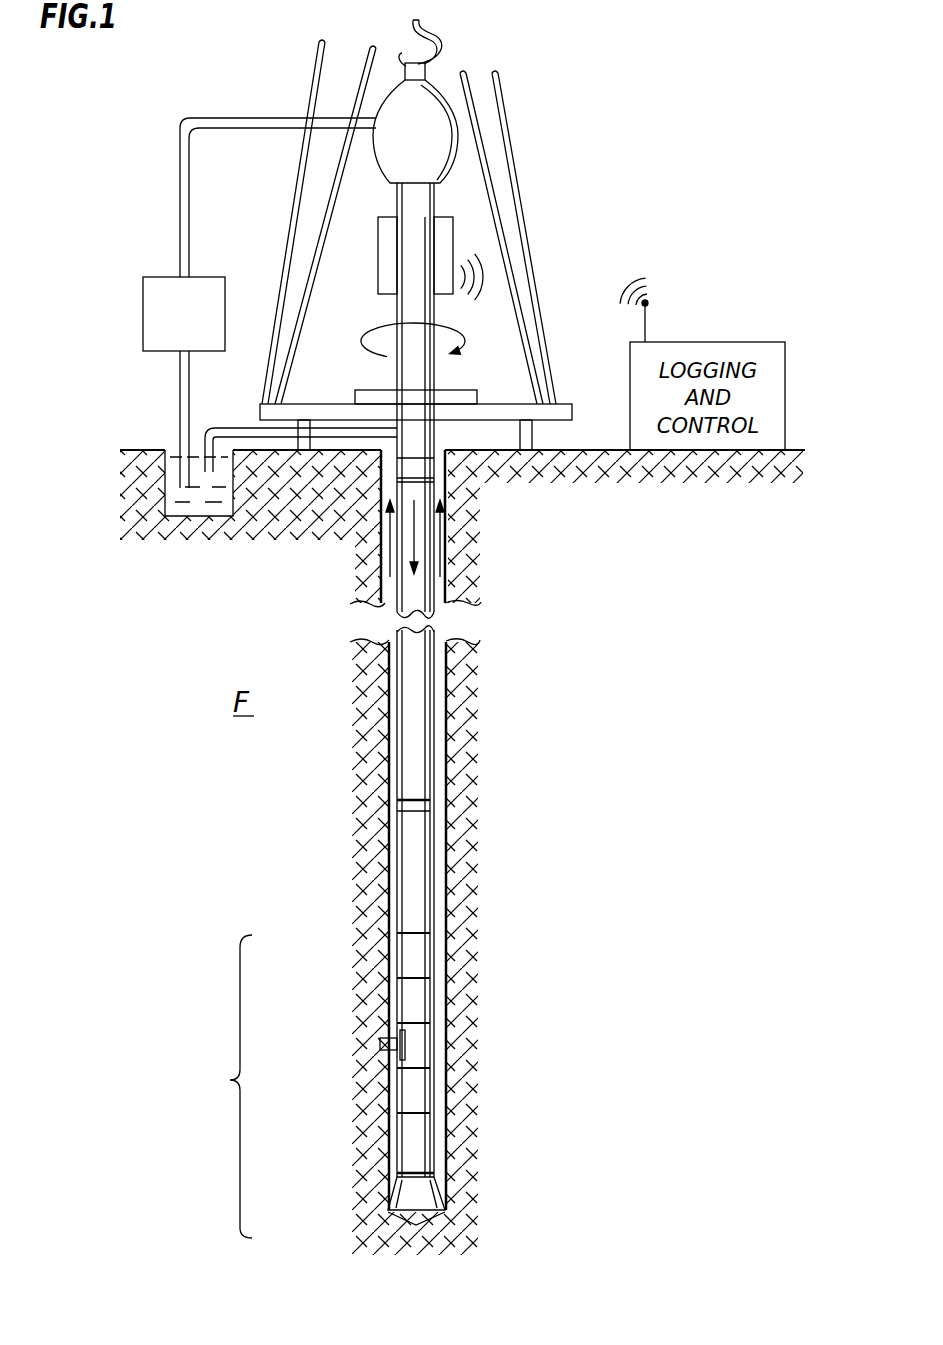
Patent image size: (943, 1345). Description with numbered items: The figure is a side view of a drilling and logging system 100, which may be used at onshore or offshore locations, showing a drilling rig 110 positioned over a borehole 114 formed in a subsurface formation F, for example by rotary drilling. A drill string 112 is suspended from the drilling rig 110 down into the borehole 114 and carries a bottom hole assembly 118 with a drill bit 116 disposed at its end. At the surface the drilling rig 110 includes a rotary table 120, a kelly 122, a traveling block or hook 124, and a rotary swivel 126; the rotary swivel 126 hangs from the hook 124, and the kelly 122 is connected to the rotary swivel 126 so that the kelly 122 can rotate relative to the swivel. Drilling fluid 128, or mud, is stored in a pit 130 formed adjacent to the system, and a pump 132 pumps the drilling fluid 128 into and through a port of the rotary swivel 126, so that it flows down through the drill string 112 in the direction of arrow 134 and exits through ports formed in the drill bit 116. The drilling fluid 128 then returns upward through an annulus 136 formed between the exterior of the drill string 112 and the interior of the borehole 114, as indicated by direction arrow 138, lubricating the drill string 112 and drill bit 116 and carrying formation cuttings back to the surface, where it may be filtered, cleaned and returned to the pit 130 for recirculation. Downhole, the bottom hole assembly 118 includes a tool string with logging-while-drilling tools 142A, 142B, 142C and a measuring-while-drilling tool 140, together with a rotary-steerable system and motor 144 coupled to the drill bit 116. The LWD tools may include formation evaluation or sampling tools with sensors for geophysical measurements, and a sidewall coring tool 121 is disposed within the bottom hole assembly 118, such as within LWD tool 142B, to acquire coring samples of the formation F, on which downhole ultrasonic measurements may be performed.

The drilling and logging system 100 is at (542, 118).
The drilling rig 110 is at (523, 178).
The drill string 112 is at (422, 767).
The borehole 114 is at (462, 420).
The drill bit 116 is at (418, 1194).
The bottom hole assembly 118 is at (230, 1080).
The rotary table 120 is at (455, 397).
The sidewall coring tool 121 is at (378, 1043).
The kelly 122 is at (408, 374).
The hook 124 is at (414, 29).
The rotary swivel 126 is at (403, 172).
The drilling fluid 128 is at (201, 512).
The pit 130 is at (172, 448).
The pump 132 is at (160, 352).
The direction arrow 134 is at (413, 533).
The annulus 136 is at (440, 664).
The direction arrow 138 is at (383, 527).
The measuring-while-drilling tool 140 is at (422, 961).
The logging-while-drilling tool 142A is at (422, 1001).
The logging-while-drilling tool 142B is at (422, 1062).
The logging-while-drilling tool 142C is at (422, 1094).
The rotary-steerable system and motor 144 is at (422, 1140).